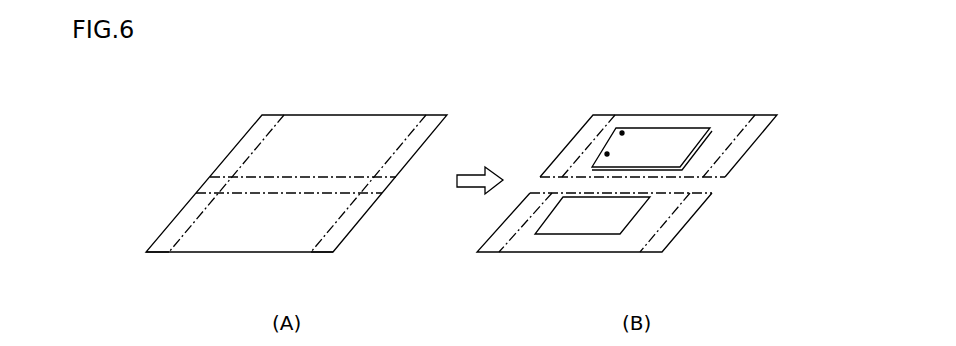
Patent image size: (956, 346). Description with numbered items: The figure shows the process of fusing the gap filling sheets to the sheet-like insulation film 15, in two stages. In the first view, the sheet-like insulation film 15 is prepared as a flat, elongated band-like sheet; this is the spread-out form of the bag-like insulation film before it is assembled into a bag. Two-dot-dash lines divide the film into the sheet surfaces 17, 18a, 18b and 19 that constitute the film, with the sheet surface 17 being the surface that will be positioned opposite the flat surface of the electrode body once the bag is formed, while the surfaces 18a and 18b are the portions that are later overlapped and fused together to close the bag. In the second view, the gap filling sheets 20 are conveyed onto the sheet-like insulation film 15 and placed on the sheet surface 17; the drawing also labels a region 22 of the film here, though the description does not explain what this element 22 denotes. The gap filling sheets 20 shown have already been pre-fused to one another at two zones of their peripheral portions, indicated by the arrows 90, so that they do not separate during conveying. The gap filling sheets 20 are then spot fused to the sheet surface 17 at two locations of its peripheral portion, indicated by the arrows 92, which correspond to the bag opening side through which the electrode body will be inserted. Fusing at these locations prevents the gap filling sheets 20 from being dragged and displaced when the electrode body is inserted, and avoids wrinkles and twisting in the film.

The sheet-like insulation film 15 is at (438, 114).
The sheet surface 17 is at (334, 158).
The surface 18a is at (240, 153).
The surface 18b is at (180, 225).
The sheet surface 19 is at (211, 185).
The gap filling sheet 20 is at (683, 150).
The upper surface 22 is at (721, 123).
The arrows indicating spot fusion zones of gap filling sheets 90 is at (607, 153).
The arrows indicating spot fusion locations 92 is at (688, 127).